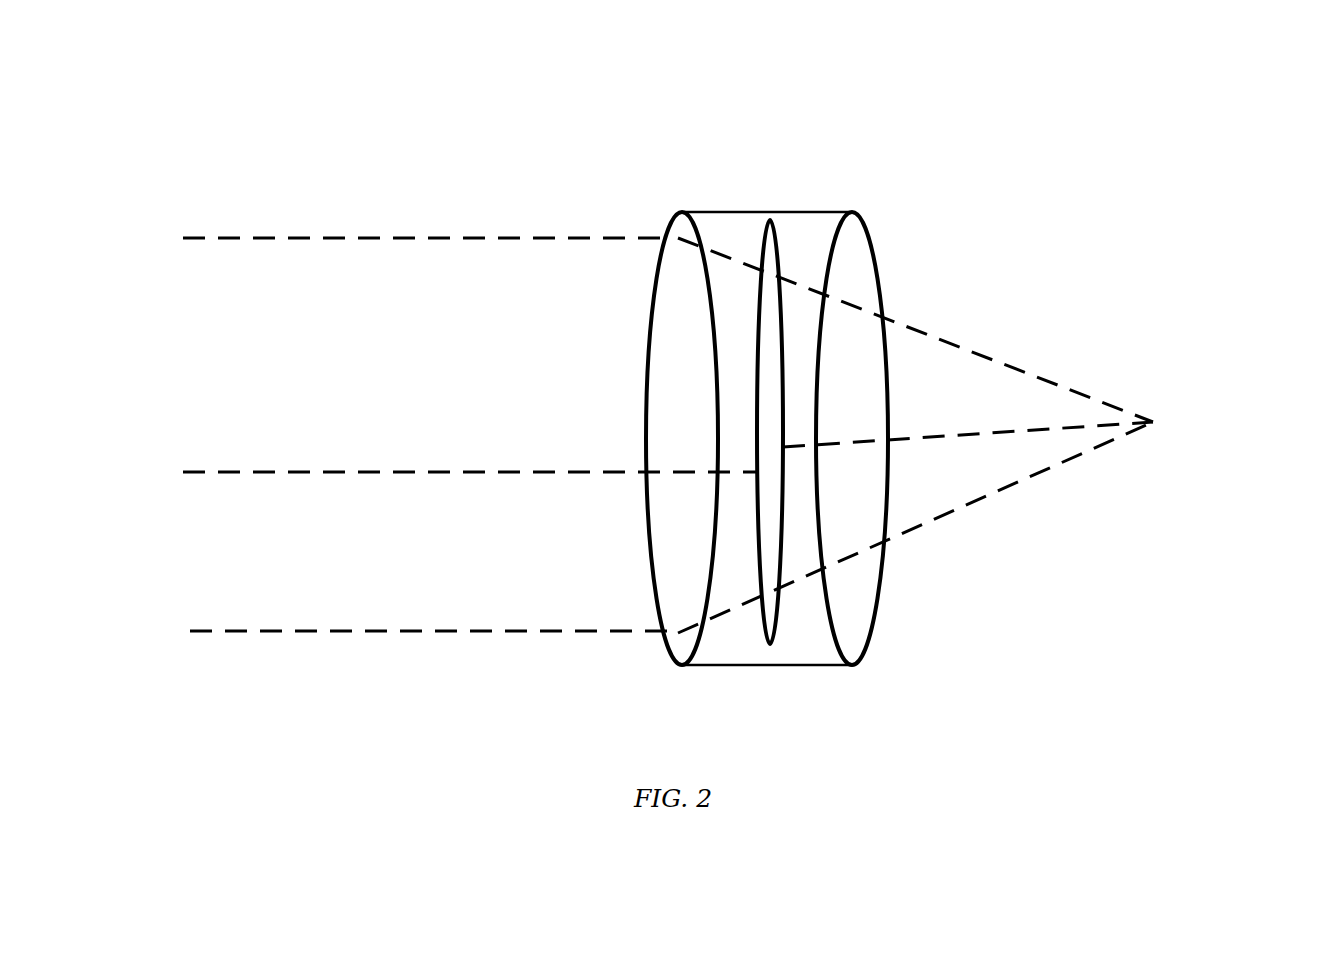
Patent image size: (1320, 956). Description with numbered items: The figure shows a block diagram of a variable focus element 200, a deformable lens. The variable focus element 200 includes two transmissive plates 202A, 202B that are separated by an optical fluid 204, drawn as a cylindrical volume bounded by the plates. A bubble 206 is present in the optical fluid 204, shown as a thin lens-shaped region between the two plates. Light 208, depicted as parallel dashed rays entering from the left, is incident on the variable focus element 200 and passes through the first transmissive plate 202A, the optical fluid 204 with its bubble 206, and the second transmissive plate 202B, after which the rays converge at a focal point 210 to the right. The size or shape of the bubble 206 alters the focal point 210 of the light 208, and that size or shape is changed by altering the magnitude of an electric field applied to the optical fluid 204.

The variable focus element 200 is at (327, 150).
The transmissive plate 202A is at (662, 391).
The transmissive plate 202B is at (878, 424).
The optical fluid 204 is at (732, 232).
The bubble 206 is at (770, 500).
The light 208 is at (363, 238).
The focal point 210 is at (1153, 423).